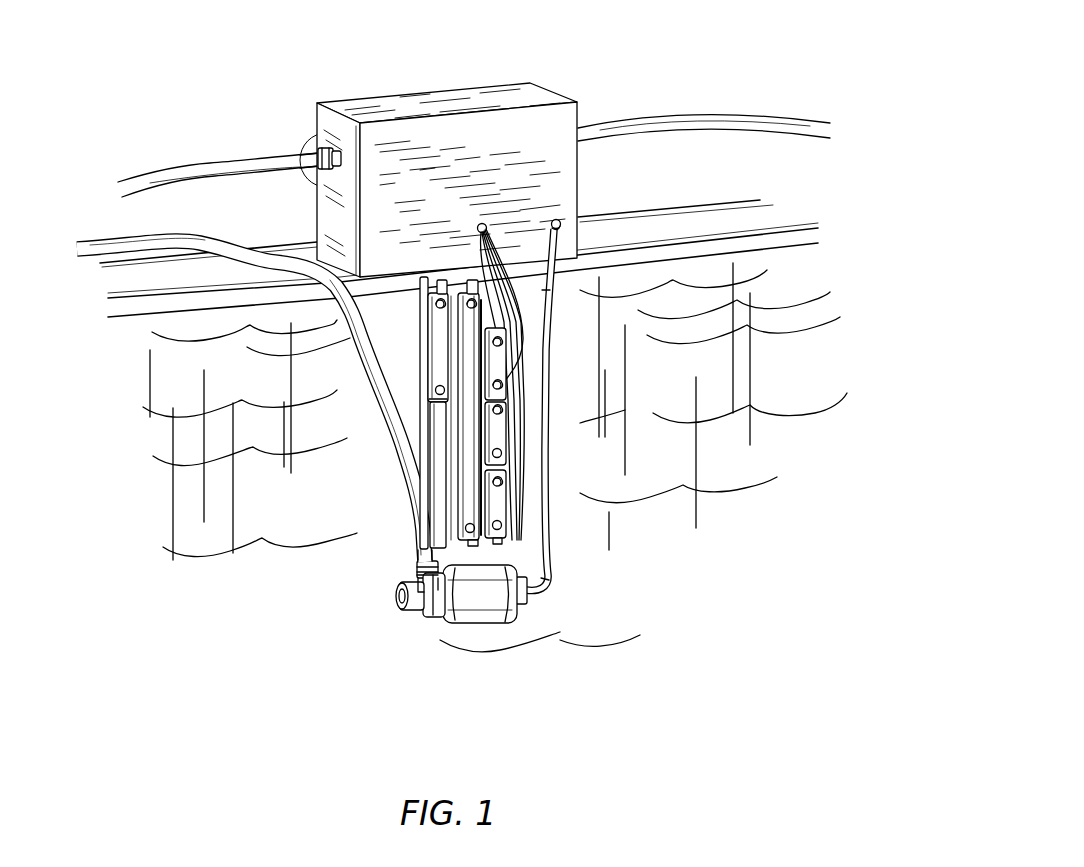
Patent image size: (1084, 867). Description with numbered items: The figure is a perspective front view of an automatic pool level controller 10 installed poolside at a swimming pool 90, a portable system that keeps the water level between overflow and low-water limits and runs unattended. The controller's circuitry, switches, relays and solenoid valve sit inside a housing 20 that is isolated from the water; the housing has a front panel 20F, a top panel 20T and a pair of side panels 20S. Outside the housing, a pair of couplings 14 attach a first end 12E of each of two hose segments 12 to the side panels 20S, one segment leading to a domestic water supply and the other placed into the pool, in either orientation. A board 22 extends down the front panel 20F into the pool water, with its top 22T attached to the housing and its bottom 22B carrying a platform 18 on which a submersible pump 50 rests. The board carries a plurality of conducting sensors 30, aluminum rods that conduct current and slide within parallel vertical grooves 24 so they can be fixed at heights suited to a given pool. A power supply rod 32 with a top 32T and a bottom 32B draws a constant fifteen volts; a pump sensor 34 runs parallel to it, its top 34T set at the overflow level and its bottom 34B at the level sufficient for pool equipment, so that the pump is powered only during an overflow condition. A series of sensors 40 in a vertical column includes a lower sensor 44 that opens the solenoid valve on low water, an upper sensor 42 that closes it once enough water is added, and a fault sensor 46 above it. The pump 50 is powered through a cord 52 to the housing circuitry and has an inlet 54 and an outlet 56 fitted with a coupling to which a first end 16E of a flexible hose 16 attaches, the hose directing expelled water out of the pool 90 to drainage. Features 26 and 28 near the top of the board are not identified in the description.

The automatic pool level controller 10 is at (359, 51).
The hose segment 12 is at (162, 172).
The hose segment end 12E is at (328, 168).
The coupling 14 is at (322, 150).
The flexible hose 16 is at (403, 472).
The first end of hose 16E is at (416, 550).
The platform 18 is at (418, 590).
The housing 20 is at (577, 84).
The top panel 20T is at (442, 98).
The side panel 20S is at (324, 217).
The front panel 20F is at (565, 172).
The board 22 is at (522, 546).
The top of board 22T is at (522, 290).
The bottom of board 22B is at (540, 582).
The vertical grooves 24 is at (534, 568).
The wire loop / wires 26 is at (480, 230).
The cable loop 28 is at (500, 240).
The conducting sensors 30 is at (425, 451).
The power supply rod 32 is at (462, 495).
The top of power supply rod 32T is at (440, 282).
The bottom of power supply rod 32B is at (459, 545).
The pump sensor 34 is at (426, 380).
The top of pump sensor 34T is at (434, 305).
The bottom of pump sensor 34B is at (418, 421).
The series of sensors 40 is at (530, 432).
The upper sensor 42 is at (505, 483).
The lower sensor 44 is at (506, 523).
The fault sensor 46 is at (508, 372).
The submersible pump 50 is at (518, 606).
The cord 52 is at (510, 509).
The inlet 54 is at (411, 608).
The outlet 56 is at (417, 574).
The swimming pool 90 is at (193, 370).